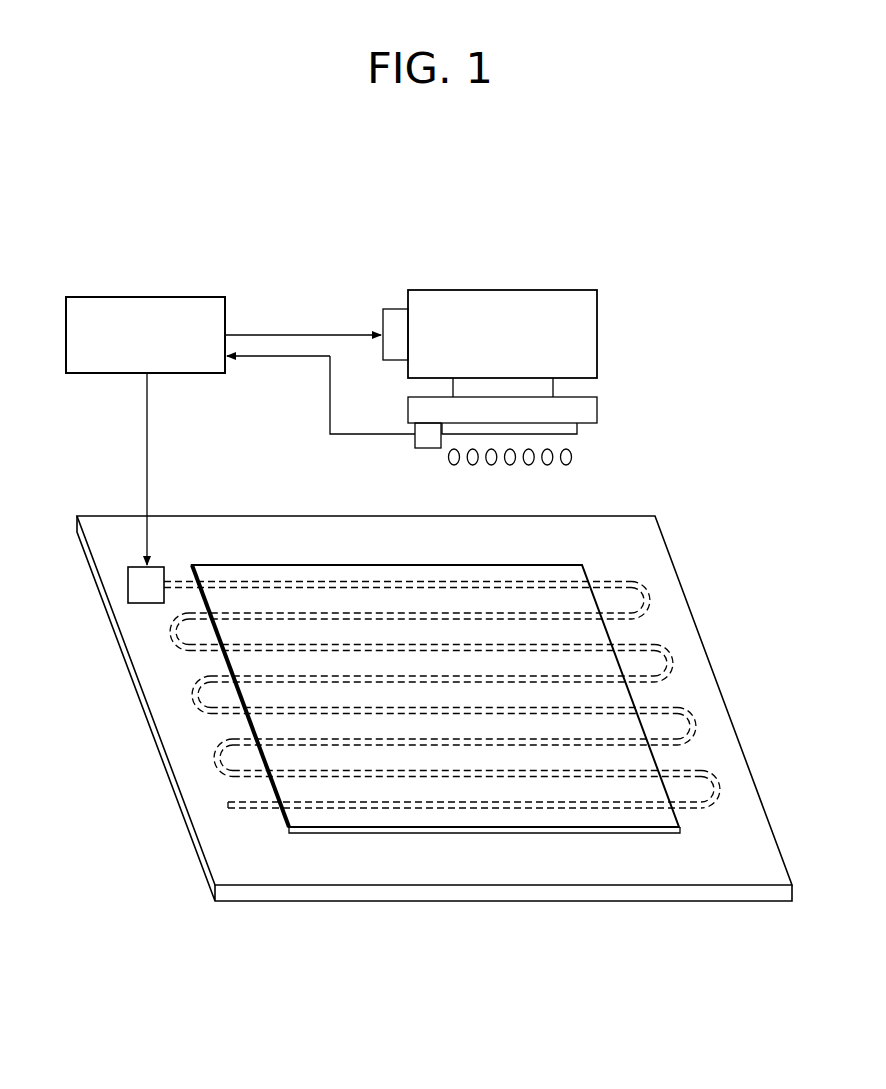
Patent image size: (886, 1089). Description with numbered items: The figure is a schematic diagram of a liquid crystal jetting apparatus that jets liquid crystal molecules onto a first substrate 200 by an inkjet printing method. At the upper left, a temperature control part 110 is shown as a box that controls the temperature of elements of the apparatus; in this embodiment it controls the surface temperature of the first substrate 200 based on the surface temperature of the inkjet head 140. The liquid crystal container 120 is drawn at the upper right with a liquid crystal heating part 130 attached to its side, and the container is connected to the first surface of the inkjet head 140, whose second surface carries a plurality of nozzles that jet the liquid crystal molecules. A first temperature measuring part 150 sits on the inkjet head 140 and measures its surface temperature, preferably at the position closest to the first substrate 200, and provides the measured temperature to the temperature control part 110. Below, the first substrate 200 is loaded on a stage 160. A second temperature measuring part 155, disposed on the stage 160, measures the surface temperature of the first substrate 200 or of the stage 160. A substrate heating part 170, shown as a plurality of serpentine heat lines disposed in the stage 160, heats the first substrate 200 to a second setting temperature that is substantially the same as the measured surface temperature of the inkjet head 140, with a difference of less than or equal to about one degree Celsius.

The temperature control part 110 is at (144, 297).
The liquid crystal container 120 is at (597, 318).
The liquid crystal heating part 130 is at (395, 306).
The inkjet head 140 is at (597, 408).
The first temperature measuring part 150 is at (432, 448).
The second temperature measuring part 155 is at (128, 585).
The stage 160 is at (703, 643).
The substrate heating part 170 is at (692, 722).
The first substrate 200 is at (510, 833).